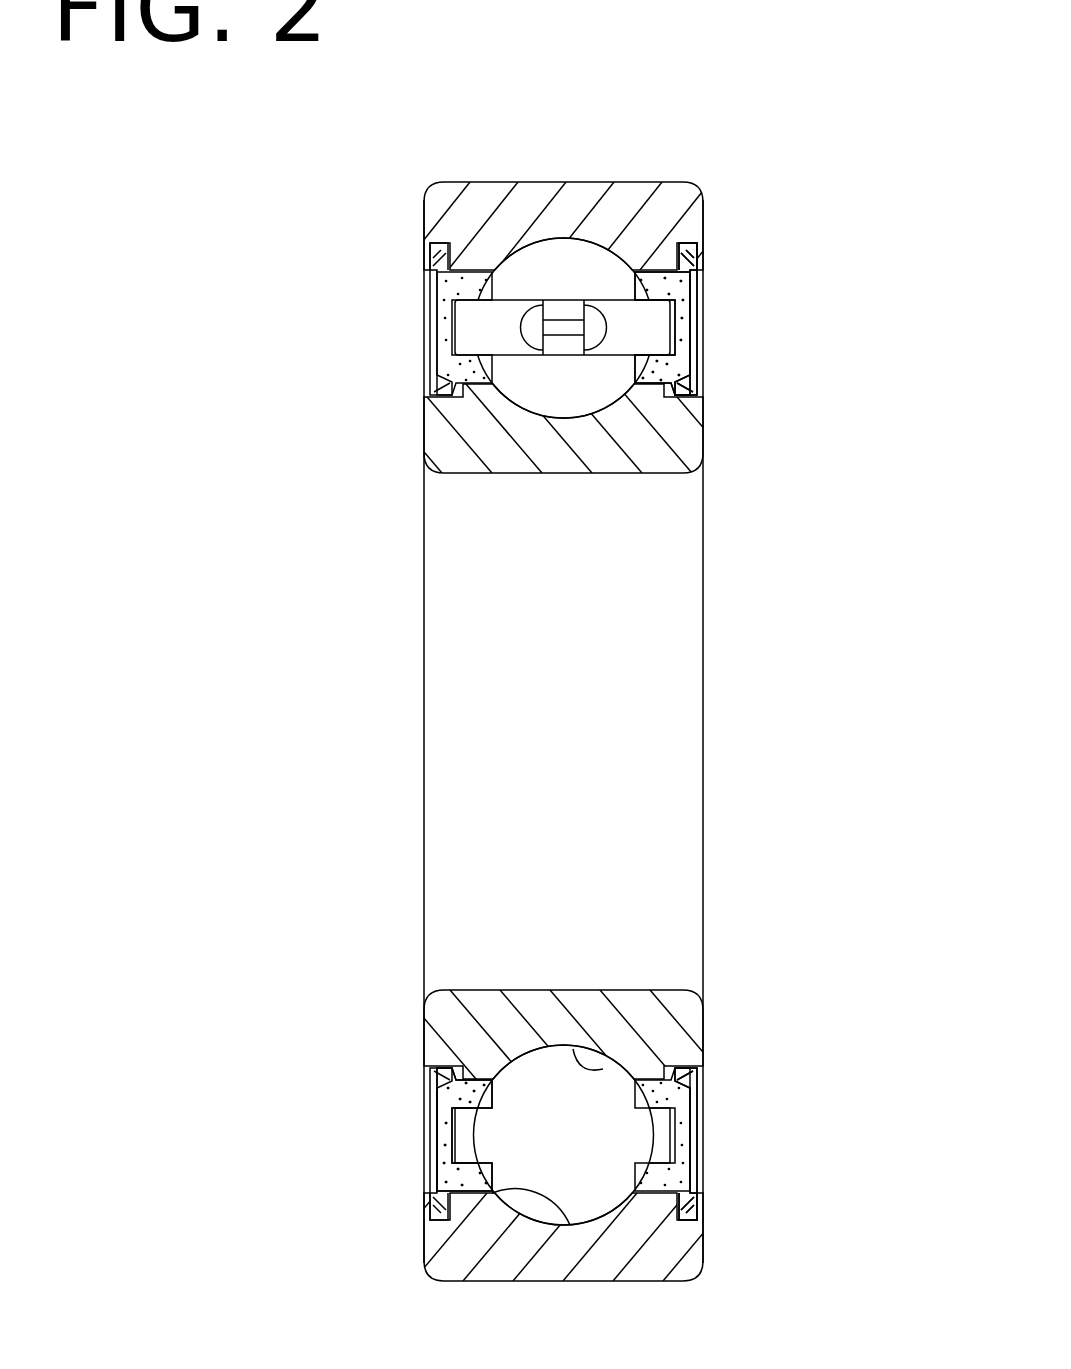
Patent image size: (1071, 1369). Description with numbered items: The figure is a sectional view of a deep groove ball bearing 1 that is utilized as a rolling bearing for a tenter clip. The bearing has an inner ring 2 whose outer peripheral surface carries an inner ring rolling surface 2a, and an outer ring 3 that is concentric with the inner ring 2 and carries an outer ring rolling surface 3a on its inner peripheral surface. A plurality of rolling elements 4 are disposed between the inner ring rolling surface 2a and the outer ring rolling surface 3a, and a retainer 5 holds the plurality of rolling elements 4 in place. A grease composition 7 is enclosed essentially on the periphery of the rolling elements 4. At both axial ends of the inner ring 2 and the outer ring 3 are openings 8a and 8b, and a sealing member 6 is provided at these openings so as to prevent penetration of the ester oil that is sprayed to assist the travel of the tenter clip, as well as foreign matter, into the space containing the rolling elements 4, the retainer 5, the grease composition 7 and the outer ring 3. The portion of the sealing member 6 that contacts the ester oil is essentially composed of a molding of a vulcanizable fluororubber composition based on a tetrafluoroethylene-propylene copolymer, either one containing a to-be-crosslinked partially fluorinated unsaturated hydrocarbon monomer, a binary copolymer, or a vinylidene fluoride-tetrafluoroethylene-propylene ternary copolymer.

The deep groove ball bearing 1 is at (790, 203).
The inner ring 2 is at (462, 437).
The inner ring rolling surface 2a is at (603, 1063).
The outer ring 3 is at (462, 218).
The outer ring rolling surface 3a is at (503, 1193).
The rolling elements 4 is at (576, 1160).
The retainer 5 is at (462, 323).
The sealing member 6 is at (703, 375).
The grease composition 7 is at (703, 318).
The opening 8a is at (703, 287).
The opening 8b is at (424, 290).